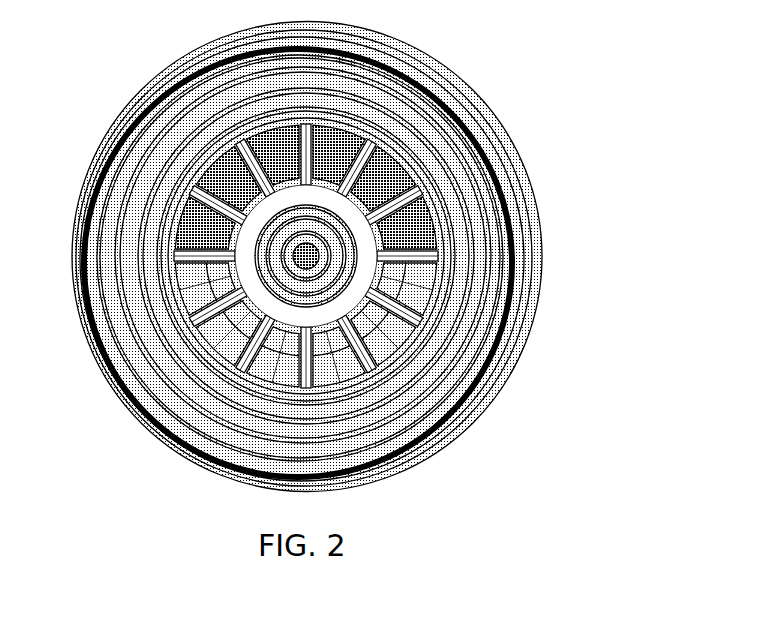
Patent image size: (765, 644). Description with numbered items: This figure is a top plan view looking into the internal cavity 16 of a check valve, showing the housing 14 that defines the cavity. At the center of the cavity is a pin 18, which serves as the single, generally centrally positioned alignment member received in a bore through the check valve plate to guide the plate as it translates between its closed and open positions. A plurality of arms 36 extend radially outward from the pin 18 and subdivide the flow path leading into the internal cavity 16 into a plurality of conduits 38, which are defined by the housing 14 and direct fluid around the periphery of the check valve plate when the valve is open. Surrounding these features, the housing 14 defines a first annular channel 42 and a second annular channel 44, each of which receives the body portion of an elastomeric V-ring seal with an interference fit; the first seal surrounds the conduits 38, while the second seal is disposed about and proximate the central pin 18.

The housing 14 is at (78, 318).
The internal cavity 16 is at (493, 306).
The pin 18 is at (435, 225).
The arms 36 is at (403, 157).
The conduits 38 is at (223, 339).
The first annular channel 42 is at (420, 365).
The second annular channel 44 is at (273, 275).